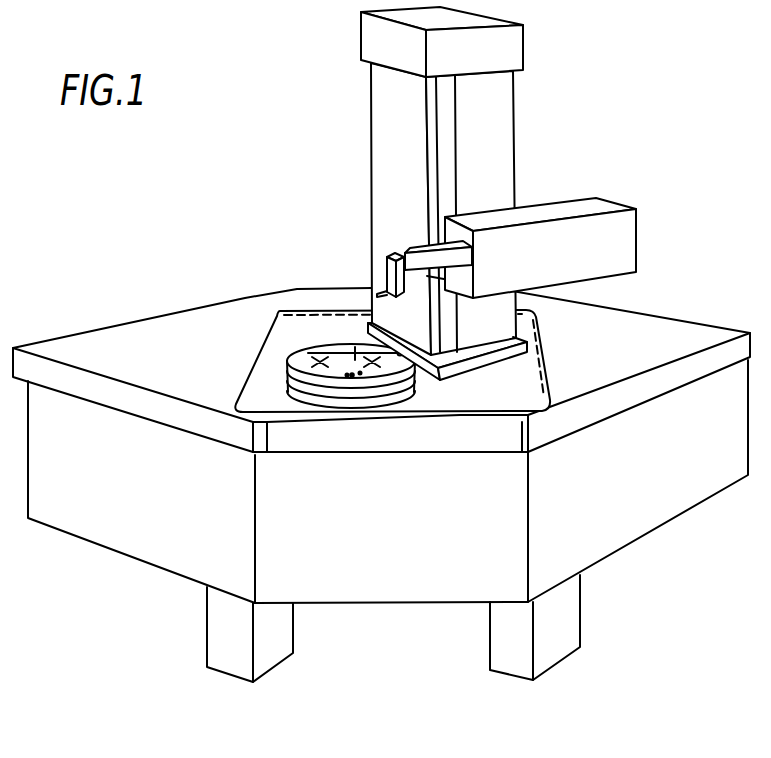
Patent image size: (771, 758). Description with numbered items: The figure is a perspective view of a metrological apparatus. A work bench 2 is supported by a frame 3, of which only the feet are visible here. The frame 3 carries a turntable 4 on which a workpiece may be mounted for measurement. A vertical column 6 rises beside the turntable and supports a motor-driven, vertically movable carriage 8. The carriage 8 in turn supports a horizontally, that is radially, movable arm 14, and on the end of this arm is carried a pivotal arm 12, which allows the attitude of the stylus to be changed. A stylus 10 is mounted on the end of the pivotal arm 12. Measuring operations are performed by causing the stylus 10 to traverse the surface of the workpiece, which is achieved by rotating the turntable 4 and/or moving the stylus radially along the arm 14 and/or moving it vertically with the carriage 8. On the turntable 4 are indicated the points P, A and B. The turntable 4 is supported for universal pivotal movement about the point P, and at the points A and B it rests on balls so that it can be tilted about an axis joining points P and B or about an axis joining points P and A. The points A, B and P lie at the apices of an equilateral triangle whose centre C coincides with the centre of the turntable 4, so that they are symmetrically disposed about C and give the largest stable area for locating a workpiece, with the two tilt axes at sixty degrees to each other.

The work bench 2 is at (145, 341).
The frame 3 is at (228, 630).
The turntable 4 is at (300, 341).
The vertical column 6 is at (536, 106).
The carriage 8 is at (612, 188).
The stylus 10 is at (376, 296).
The pivotal arm 12 is at (386, 265).
The horizontally movable arm 14 is at (417, 250).
The point P is at (287, 367).
The point A is at (400, 356).
The point B is at (347, 375).
The centre C is at (352, 364).